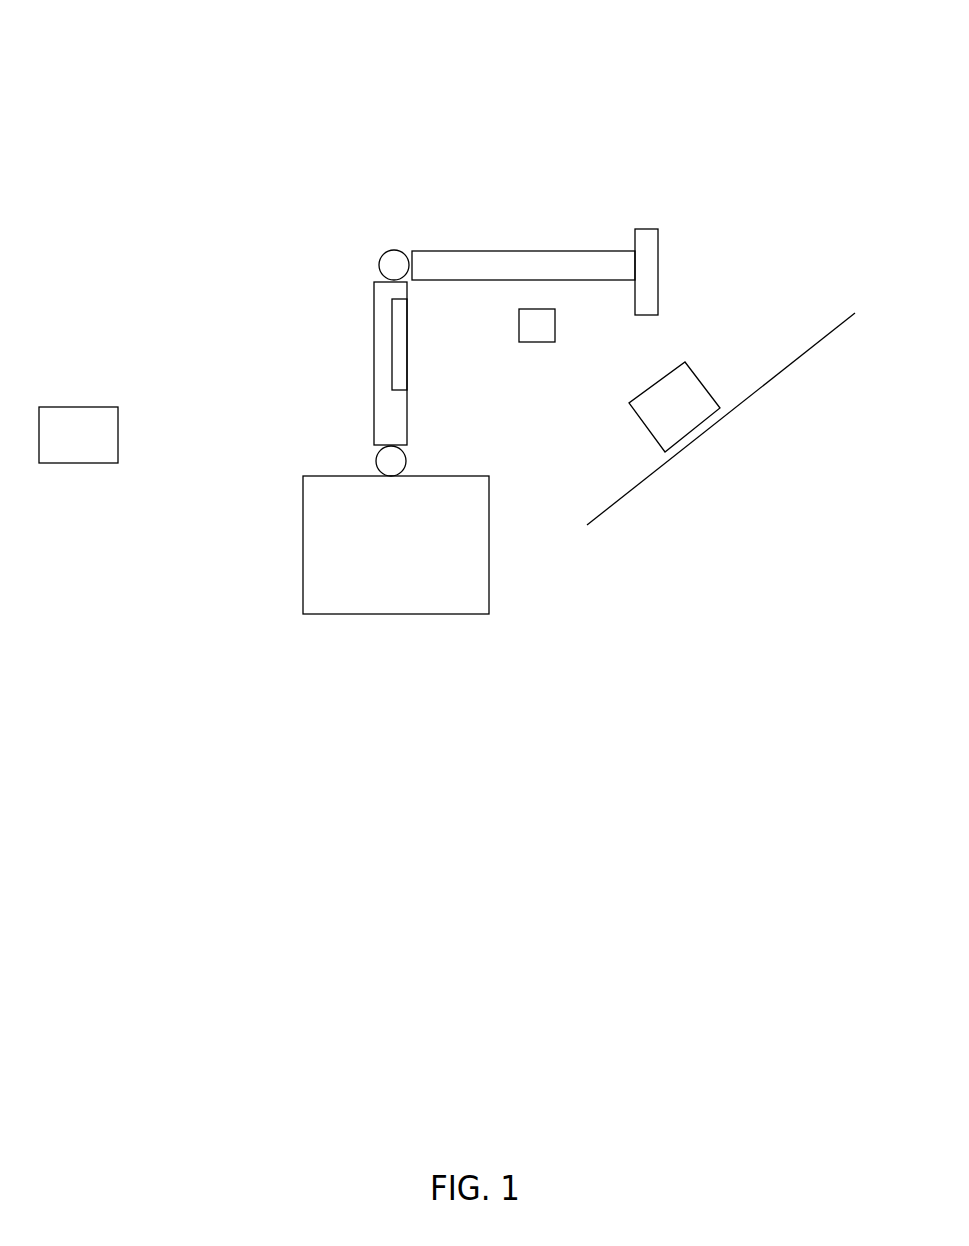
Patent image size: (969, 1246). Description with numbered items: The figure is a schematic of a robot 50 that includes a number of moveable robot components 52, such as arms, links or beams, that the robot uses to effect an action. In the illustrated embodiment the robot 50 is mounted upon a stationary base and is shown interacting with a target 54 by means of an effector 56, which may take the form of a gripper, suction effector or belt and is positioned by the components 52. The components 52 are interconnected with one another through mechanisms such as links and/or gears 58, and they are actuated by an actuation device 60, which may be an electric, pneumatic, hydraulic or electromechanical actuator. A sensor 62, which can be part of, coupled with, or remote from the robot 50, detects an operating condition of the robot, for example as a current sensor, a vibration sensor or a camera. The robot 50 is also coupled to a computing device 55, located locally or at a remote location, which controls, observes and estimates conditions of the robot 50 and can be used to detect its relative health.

The robot 50 is at (200, 112).
The moveable robot components 52 is at (550, 250).
The target 54 is at (702, 380).
The computing device 55 is at (88, 402).
The effector 56 is at (648, 192).
The links and/or gears 58 is at (380, 256).
The actuation device 60 is at (395, 322).
The sensor 62 is at (512, 327).